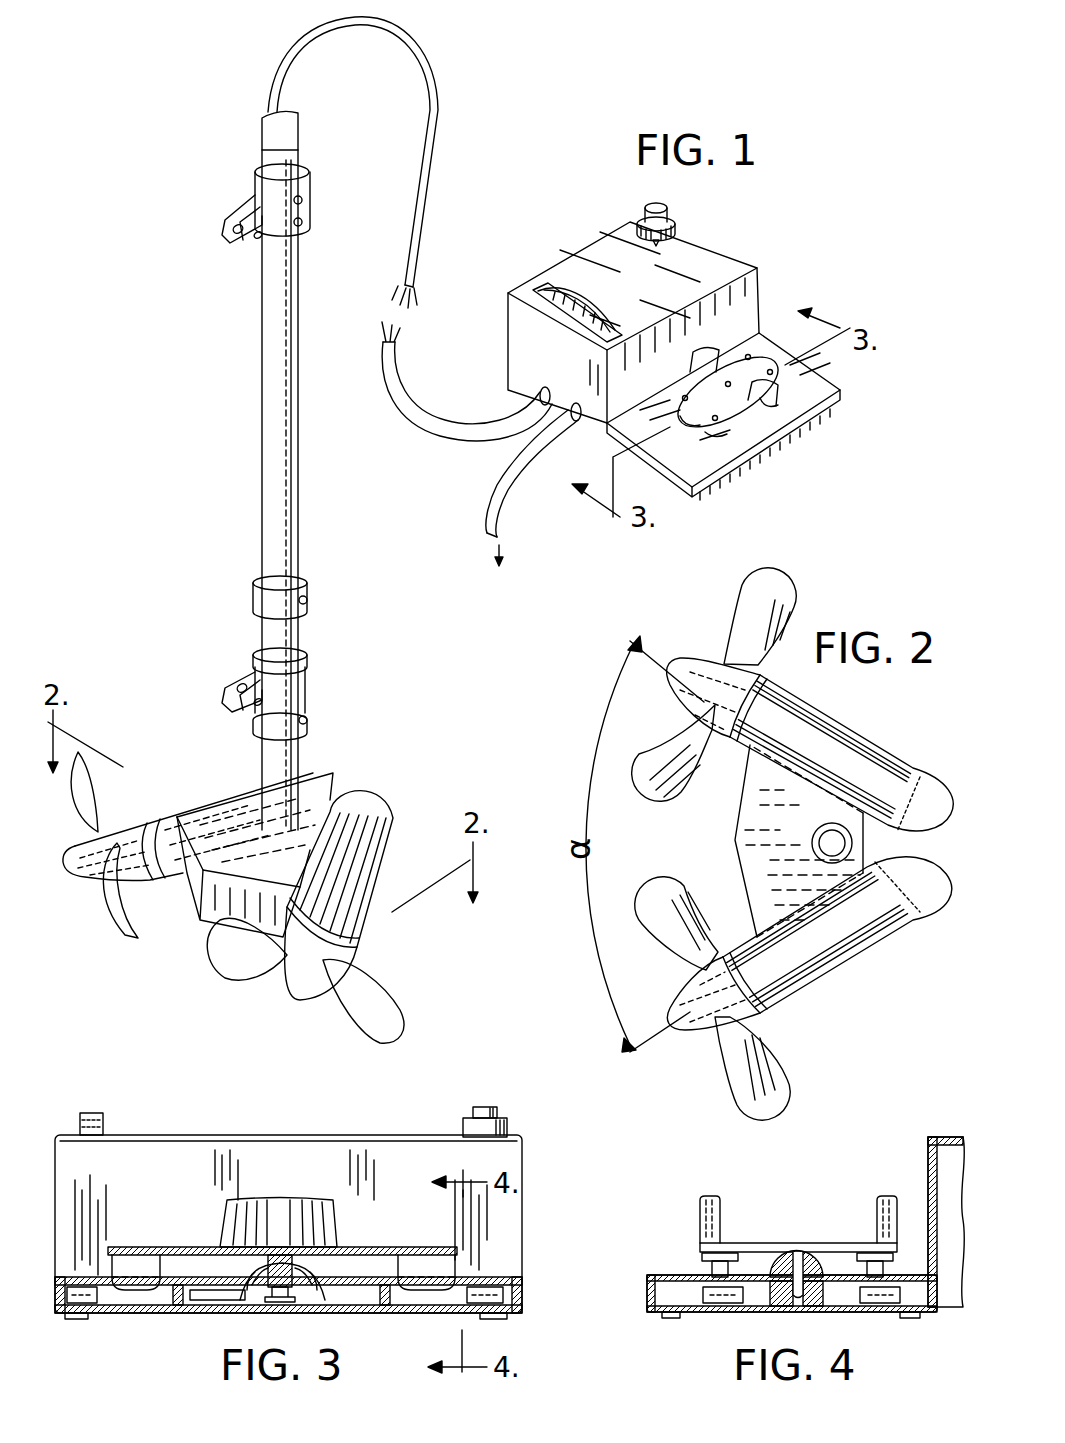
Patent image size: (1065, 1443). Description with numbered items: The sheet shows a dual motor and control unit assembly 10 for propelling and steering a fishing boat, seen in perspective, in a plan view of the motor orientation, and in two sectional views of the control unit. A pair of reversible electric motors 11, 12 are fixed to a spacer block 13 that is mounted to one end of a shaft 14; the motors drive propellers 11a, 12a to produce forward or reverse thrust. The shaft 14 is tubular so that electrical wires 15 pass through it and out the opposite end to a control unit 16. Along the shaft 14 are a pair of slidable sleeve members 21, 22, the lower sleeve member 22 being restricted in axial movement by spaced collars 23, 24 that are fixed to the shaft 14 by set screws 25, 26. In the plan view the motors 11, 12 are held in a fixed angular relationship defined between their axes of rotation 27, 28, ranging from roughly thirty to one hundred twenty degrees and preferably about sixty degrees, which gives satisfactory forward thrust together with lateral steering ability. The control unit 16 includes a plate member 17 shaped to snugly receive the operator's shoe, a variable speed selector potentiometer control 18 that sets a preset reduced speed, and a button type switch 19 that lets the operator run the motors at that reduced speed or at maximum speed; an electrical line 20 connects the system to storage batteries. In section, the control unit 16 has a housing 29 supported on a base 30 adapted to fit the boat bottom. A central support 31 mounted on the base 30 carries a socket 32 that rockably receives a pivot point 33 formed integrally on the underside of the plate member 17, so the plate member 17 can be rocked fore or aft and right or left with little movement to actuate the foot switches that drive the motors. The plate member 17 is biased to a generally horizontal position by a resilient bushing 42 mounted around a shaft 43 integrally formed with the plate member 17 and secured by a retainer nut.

In FIG. 1, the dual motor and control unit assembly 10 is at (471, 177).
In FIG. 1, the reversible electric motor 11 is at (214, 797).
In FIG. 2, the reversible electric motor 11 is at (798, 711).
In FIG. 1, the propeller 11a is at (130, 937).
In FIG. 2, the propeller 11a is at (774, 591).
In FIG. 1, the reversible electric motor 12 is at (363, 857).
In FIG. 2, the reversible electric motor 12 is at (818, 968).
In FIG. 1, the propeller 12a is at (390, 1020).
In FIG. 2, the propeller 12a is at (778, 1080).
In FIG. 1, the spacer block 13 is at (307, 817).
In FIG. 2, the spacer block 13 is at (745, 848).
In FIG. 1, the shaft 14 is at (283, 540).
In FIG. 2, the shaft 14 is at (815, 846).
In FIG. 1, the electrical wires 15 is at (410, 50).
In FIG. 1, the control unit 16 is at (703, 269).
In FIG. 1, the plate member 17 is at (783, 358).
In FIG. 3, the plate member 17 is at (377, 1247).
In FIG. 4, the plate member 17 is at (730, 1243).
In FIG. 1, the variable speed selector potentiometer control 18 is at (562, 290).
In FIG. 3, the variable speed selector potentiometer control 18 is at (103, 1123).
In FIG. 1, the button type switch 19 is at (670, 209).
In FIG. 3, the button type switch 19 is at (500, 1113).
In FIG. 1, the electrical line 20 is at (508, 505).
In FIG. 1, the slidable sleeve member 21 is at (305, 178).
In FIG. 1, the slidable sleeve member 22 is at (298, 688).
In FIG. 1, the collar 23 is at (307, 582).
In FIG. 1, the collar 24 is at (262, 722).
In FIG. 1, the set screw 25 is at (308, 600).
In FIG. 1, the set screw 26 is at (305, 720).
In FIG. 2, the axis of rotation 27 is at (632, 641).
In FIG. 2, the axis of rotation 28 is at (636, 1045).
In FIG. 3, the housing 29 is at (233, 1135).
In FIG. 4, the housing 29 is at (927, 1166).
In FIG. 3, the base 30 is at (376, 1306).
In FIG. 4, the base 30 is at (707, 1310).
In FIG. 3, the central support 31 is at (193, 1292).
In FIG. 3, the socket 32 is at (235, 1288).
In FIG. 3, the pivot point 33 is at (327, 1290).
In FIG. 4, the pivot point 33 is at (815, 1250).
In FIG. 3, the resilient bushing 42 is at (270, 1300).
In FIG. 3, the shaft 43 is at (270, 1250).